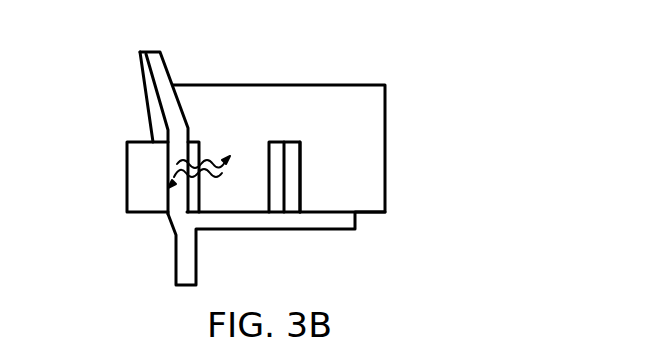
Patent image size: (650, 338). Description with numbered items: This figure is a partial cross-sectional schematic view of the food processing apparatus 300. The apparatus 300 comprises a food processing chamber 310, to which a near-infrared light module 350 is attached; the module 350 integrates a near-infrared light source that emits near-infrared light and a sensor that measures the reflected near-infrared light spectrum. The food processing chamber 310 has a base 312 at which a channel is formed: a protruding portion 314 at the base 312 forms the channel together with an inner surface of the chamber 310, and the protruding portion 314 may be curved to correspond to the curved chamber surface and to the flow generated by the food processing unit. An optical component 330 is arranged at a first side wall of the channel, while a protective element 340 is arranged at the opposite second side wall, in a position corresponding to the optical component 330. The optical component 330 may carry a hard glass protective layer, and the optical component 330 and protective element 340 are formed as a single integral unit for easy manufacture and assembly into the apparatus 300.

The food processing apparatus 300 is at (472, 110).
The food processing chamber 310 is at (156, 84).
The base 312 is at (320, 230).
The protruding portion 314 is at (293, 167).
The optical component 330 is at (277, 155).
The protective element 340 is at (183, 217).
The near-infrared light module 350 is at (138, 172).